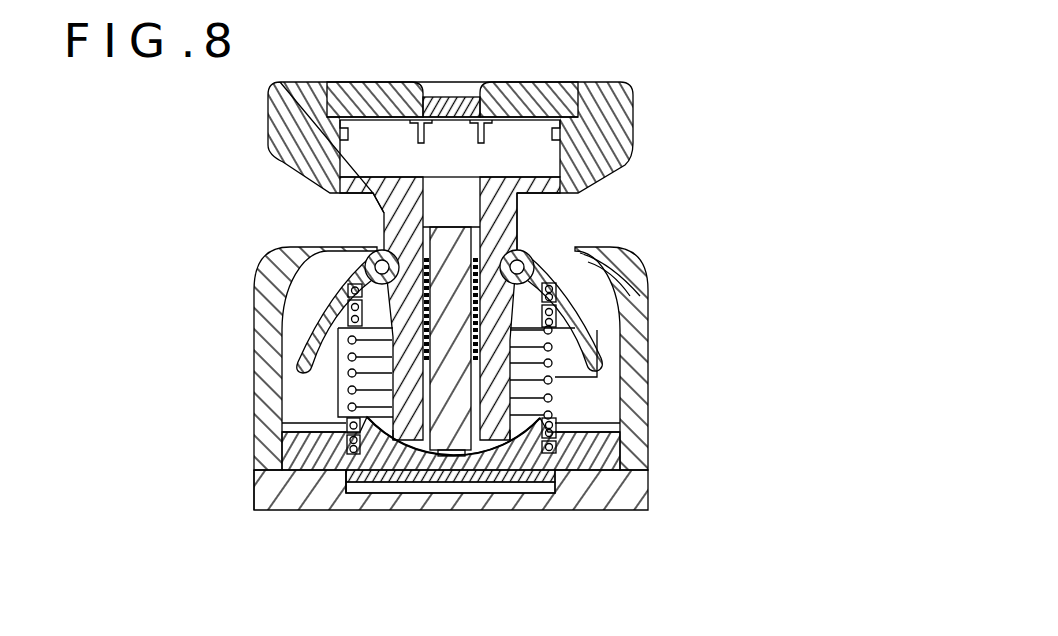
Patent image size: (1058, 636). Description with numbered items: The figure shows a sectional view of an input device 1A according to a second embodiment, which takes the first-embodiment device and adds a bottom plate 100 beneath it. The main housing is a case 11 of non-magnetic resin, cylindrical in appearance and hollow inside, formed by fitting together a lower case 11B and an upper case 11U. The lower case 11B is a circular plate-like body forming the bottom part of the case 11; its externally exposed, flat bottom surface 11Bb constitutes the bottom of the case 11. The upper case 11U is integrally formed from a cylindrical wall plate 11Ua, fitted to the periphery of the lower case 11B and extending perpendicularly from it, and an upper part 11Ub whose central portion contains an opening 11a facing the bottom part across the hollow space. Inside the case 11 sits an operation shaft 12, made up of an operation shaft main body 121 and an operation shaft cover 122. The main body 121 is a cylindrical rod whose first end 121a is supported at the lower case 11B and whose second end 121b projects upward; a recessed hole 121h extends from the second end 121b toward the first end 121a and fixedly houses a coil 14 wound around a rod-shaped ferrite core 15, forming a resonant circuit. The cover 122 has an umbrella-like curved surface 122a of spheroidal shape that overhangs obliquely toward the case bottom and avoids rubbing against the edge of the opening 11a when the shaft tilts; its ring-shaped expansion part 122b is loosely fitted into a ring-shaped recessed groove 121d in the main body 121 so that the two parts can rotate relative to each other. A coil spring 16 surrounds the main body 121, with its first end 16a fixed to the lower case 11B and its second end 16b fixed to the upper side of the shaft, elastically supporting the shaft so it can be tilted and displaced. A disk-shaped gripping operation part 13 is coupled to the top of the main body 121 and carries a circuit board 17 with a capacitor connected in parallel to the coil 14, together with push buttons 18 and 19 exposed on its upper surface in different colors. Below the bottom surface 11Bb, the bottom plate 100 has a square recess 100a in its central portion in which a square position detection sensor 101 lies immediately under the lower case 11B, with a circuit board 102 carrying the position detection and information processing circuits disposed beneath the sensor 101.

The input device 1A is at (787, 126).
The case 11 is at (556, 414).
The upper case 11U is at (540, 345).
The cylindrical wall plate 11Ua is at (633, 378).
The upper part 11Ub is at (620, 300).
The opening 11a is at (558, 253).
The lower case 11B is at (527, 501).
The bottom surface 11Bb is at (283, 510).
The operation shaft 12 is at (422, 360).
The operation shaft main body 121 is at (435, 360).
The first end 121a is at (483, 437).
The second end 121b is at (520, 206).
The ring-shaped recessed groove 121d is at (385, 233).
The recessed hole 121h is at (430, 210).
The operation shaft cover 122 is at (449, 312).
The curved surface 122a is at (598, 352).
The ring-shaped expansion part 122b is at (355, 266).
The gripping operation part 13 is at (627, 115).
The coil 14 is at (391, 462).
The ferrite core 15 is at (447, 387).
The coil spring 16 is at (347, 393).
The first end 16a is at (345, 442).
The second end 16b is at (346, 327).
The circuit board 17 is at (370, 137).
The push button 18 is at (373, 88).
The push button 19 is at (520, 88).
The bottom plate 100 is at (297, 500).
The recess 100a is at (367, 500).
The position detection sensor 101 is at (545, 475).
The circuit board 102 is at (533, 490).